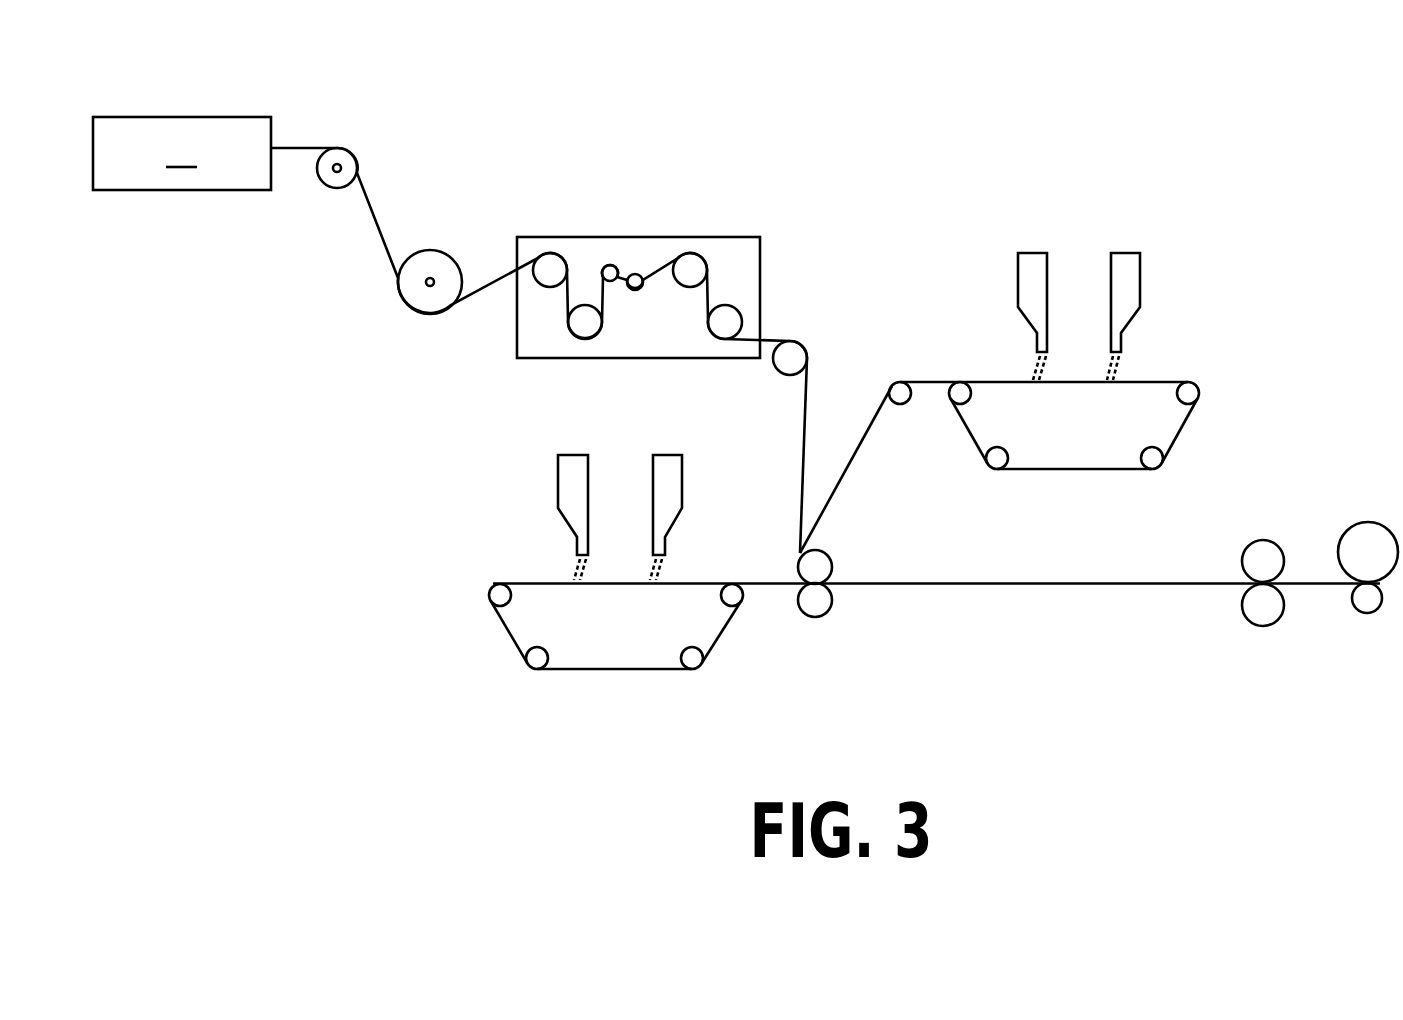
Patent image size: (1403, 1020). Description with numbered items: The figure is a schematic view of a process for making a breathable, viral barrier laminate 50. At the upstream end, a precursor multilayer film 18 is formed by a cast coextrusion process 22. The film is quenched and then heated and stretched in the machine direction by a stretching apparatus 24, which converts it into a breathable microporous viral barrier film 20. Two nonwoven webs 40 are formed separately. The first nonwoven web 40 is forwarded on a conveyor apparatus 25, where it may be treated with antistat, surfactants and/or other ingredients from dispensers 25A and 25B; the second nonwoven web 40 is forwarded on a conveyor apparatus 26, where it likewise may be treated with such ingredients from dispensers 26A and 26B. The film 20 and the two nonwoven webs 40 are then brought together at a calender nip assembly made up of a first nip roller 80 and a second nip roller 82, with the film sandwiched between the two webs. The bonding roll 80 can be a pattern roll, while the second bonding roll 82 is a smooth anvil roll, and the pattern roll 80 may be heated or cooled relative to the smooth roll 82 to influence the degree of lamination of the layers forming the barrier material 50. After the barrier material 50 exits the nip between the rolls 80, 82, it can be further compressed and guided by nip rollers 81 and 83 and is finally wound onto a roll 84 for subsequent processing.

The precursor multilayer film 18 is at (300, 148).
The cast coextrusion process 22 is at (182, 153).
The stretching apparatus 24 is at (657, 237).
The breathable microporous viral barrier film 20 is at (805, 453).
The nonwoven web 40 is at (767, 581).
The conveyor apparatus 25 is at (1073, 383).
The dispenser 25A is at (1032, 253).
The dispenser 25B is at (1122, 253).
The conveyor apparatus 26 is at (553, 584).
The dispenser 26A is at (558, 476).
The dispenser 26B is at (670, 455).
The breathable viral barrier laminate 50 is at (1028, 587).
The first nip roller 80 is at (832, 557).
The second nip roller 82 is at (815, 617).
The nip roller 81 is at (1263, 540).
The nip roller 83 is at (1262, 626).
The roll 84 is at (1377, 522).